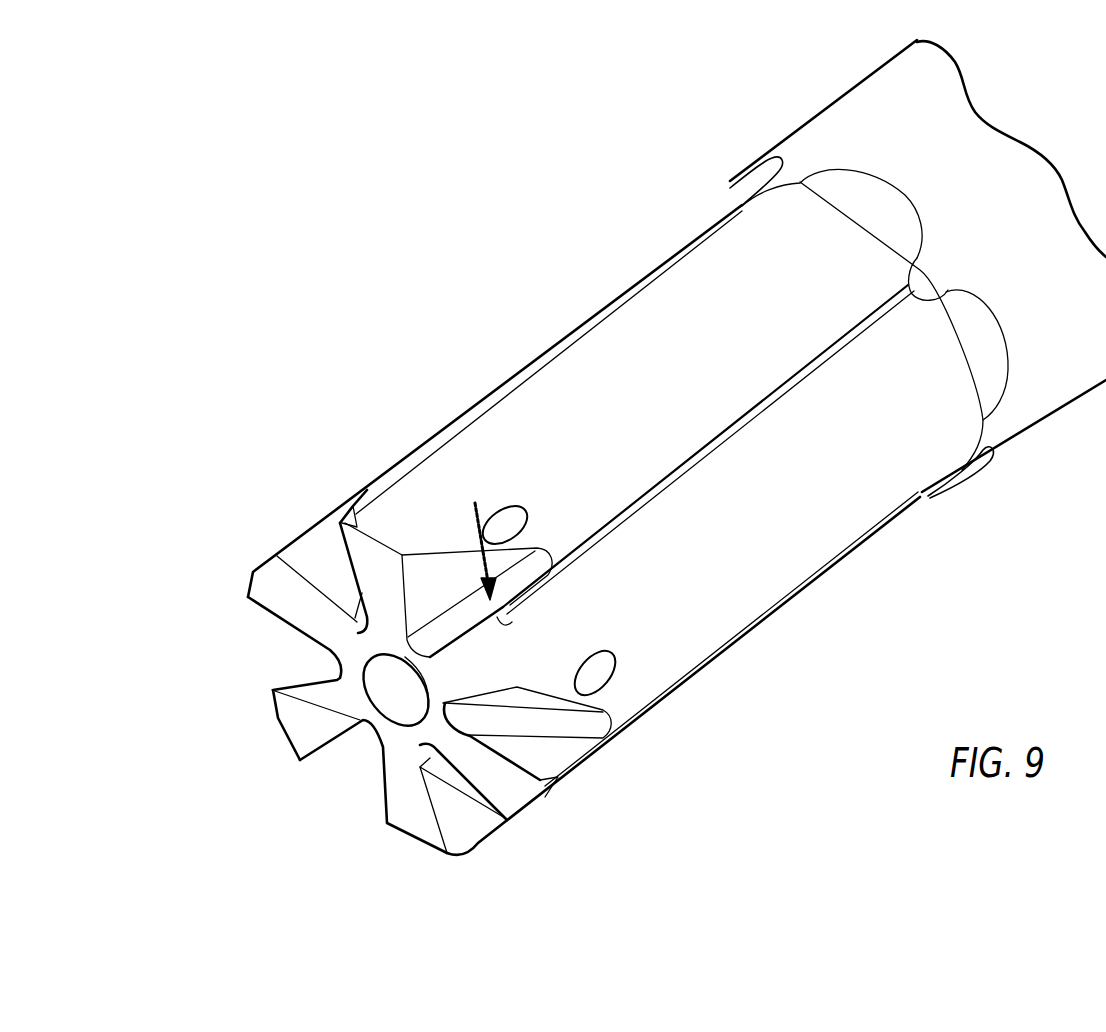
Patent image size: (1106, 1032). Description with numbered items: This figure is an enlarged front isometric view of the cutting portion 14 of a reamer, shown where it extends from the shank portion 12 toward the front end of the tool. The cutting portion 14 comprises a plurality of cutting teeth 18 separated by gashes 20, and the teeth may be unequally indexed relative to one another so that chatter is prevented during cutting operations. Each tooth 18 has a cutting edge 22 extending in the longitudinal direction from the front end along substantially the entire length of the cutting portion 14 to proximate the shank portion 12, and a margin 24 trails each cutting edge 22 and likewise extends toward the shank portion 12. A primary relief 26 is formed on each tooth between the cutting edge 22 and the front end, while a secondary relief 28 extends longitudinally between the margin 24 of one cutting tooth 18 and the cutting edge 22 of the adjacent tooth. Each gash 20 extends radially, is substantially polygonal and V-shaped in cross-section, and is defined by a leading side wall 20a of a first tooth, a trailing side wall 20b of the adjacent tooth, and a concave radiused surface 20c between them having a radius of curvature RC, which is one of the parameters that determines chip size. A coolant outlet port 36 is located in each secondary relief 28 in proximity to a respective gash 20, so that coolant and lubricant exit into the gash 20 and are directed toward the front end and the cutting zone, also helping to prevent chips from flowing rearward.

The shank portion 12 is at (807, 96).
The cutting portion 14 is at (566, 271).
The cutting teeth 18 is at (361, 552).
The gash 20 is at (325, 586).
The leading side wall 20a is at (527, 567).
The trailing side wall 20b is at (308, 570).
The radiused surface 20c is at (530, 550).
The cutting edge 22 is at (480, 396).
The margin 24 is at (533, 360).
The primary relief 26 is at (343, 512).
The secondary relief 28 is at (688, 300).
The coolant outlet port 36 is at (505, 522).
The radius of curvature RC is at (475, 503).